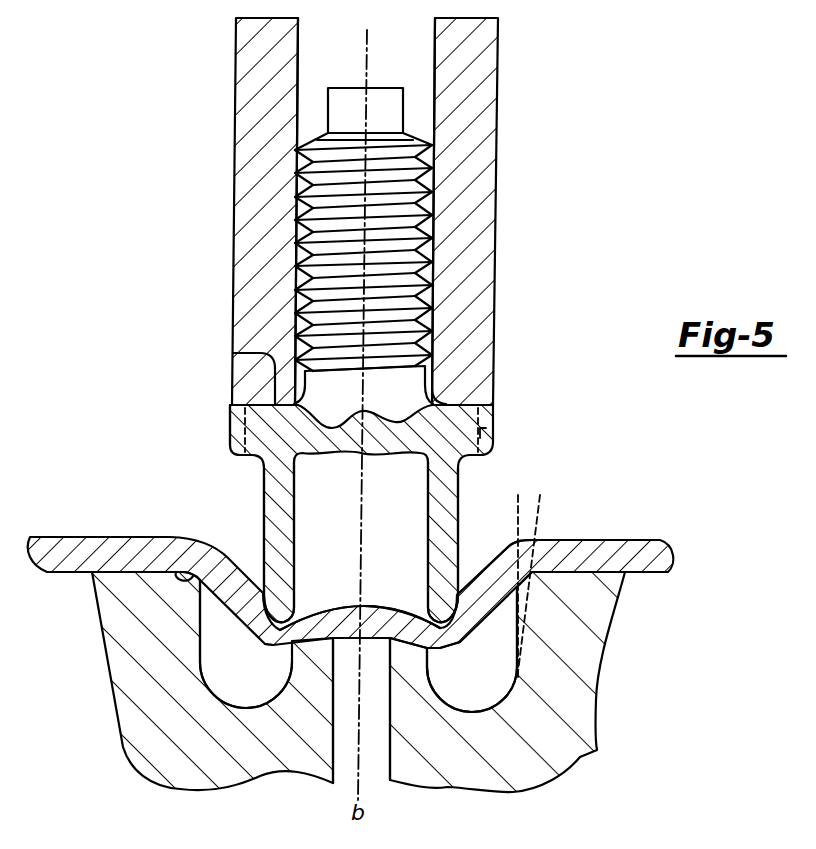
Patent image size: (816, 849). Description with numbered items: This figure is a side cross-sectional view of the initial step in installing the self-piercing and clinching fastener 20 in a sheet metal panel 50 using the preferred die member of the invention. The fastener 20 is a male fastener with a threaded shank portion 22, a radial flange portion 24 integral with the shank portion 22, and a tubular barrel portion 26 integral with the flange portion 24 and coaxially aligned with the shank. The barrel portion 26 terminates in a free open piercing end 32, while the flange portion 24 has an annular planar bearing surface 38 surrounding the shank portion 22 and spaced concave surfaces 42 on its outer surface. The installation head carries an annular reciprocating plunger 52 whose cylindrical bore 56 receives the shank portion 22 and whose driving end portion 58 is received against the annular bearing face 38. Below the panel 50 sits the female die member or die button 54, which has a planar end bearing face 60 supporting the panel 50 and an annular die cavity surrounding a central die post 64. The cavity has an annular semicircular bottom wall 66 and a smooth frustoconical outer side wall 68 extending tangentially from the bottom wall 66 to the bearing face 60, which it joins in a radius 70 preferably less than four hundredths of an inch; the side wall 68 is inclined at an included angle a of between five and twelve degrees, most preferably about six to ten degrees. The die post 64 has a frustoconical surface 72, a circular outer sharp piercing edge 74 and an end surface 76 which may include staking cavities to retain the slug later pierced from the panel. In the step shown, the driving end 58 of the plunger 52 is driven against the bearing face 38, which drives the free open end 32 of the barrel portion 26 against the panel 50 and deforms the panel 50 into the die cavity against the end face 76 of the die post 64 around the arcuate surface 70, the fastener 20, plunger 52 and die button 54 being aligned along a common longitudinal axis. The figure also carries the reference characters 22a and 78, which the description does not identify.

The self-piercing and clinching fastener 20 is at (214, 460).
The threaded shank portion 22 is at (405, 147).
The bolt end 22a is at (440, 386).
The radial flange portion 24 is at (222, 432).
The tubular barrel portion 26 is at (460, 492).
The free open piercing end 32 is at (457, 618).
The annular planar bearing surface 38 is at (237, 355).
The concave surfaces 42 is at (493, 433).
The panel 50 is at (657, 553).
The reciprocating plunger 52 is at (245, 215).
The female die member or die button 54 is at (553, 743).
The cylindrical bore 56 is at (298, 74).
The driving end portion 58 is at (233, 425).
The planar end bearing face 60 is at (582, 570).
The central die post 64 is at (309, 645).
The annular semicircular bottom wall 66 is at (250, 706).
The frustoconical outer side wall 68 is at (215, 630).
The radius 70 is at (182, 575).
The frustoconical surface 72 is at (428, 663).
The circular outer sharp piercing edge 74 is at (283, 640).
The end surface 76 is at (407, 617).
The die central bore 78 is at (395, 778).
The included angle a is at (473, 507).